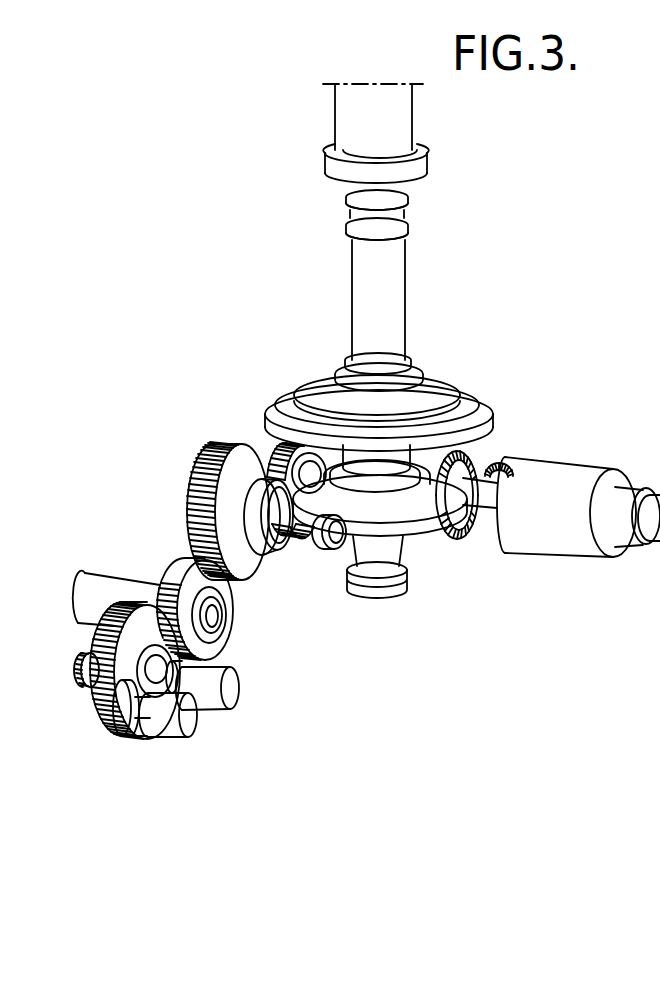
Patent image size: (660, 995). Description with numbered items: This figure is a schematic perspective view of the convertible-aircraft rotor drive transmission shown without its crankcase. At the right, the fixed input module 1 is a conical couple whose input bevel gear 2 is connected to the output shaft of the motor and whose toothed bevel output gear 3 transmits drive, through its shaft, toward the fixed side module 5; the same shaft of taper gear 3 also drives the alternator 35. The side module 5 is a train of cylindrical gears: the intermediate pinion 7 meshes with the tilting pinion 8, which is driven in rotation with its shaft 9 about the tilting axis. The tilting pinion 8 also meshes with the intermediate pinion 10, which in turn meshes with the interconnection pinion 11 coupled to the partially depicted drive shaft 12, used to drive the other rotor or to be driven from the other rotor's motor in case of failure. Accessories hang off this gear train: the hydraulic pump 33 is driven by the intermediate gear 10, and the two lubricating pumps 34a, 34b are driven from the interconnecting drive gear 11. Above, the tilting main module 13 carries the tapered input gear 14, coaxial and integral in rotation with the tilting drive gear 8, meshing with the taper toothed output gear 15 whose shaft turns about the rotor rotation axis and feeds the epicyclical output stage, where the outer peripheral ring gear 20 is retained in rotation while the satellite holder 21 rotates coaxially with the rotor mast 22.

The input module 1 is at (537, 416).
The input bevel gear 2 is at (505, 463).
The toothed bevel output gear 3 is at (467, 520).
The side module 5 is at (168, 513).
The pinion 7 is at (268, 445).
The tilting pinion 8 is at (215, 478).
The shaft 9 is at (252, 535).
The intermediate pinion 10 is at (177, 567).
The interconnection pinion 11 is at (102, 702).
The drive shaft 12 is at (87, 668).
The main module 13 is at (414, 604).
The tapered input gear 14 is at (302, 532).
The taper toothed output gear 15 is at (413, 503).
The outer peripheral ring gear 20 is at (484, 410).
The satellite holder 21 is at (427, 390).
The mast 22 is at (390, 283).
The hydraulic pump 33 is at (113, 587).
The lubricating pump 34a is at (184, 716).
The lubricating pump 34b is at (230, 687).
The alternator 35 is at (562, 533).